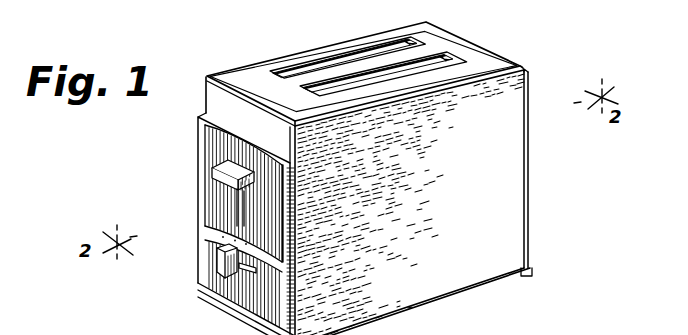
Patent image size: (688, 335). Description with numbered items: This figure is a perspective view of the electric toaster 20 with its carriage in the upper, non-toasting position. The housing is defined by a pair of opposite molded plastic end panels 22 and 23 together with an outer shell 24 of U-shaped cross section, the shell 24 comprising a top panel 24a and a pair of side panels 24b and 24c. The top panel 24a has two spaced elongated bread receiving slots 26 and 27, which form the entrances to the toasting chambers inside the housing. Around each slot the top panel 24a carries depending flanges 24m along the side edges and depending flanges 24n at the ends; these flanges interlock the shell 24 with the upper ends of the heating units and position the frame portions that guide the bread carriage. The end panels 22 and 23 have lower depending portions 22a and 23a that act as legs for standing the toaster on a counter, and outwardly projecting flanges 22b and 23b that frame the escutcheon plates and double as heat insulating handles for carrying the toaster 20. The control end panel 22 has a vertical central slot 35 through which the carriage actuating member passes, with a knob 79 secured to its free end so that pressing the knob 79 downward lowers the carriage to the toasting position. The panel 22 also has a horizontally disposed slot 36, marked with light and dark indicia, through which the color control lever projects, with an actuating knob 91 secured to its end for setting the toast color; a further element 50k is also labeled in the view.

The electric toaster 20 is at (563, 88).
The end panel 22 is at (197, 200).
The lower depending portion 22a is at (202, 292).
The outwardly projecting flange 22b is at (198, 118).
The end panel 23 is at (529, 154).
The lower depending portion 23a is at (526, 277).
The outwardly projecting flange 23b is at (528, 88).
The outer shell 24 is at (505, 197).
The top panel 24a is at (477, 53).
The side panel 24b is at (143, 330).
The side panel 24c is at (513, 230).
The depending flange 24m is at (340, 91).
The depending flange 24n is at (452, 62).
The bread receiving slot 26 is at (296, 73).
The bread receiving slot 27 is at (362, 83).
The vertical central slot 35 is at (243, 196).
The horizontal slot 36 is at (220, 256).
The base element 50k is at (177, 330).
The knob 79 is at (222, 165).
The actuating knob 91 is at (240, 266).